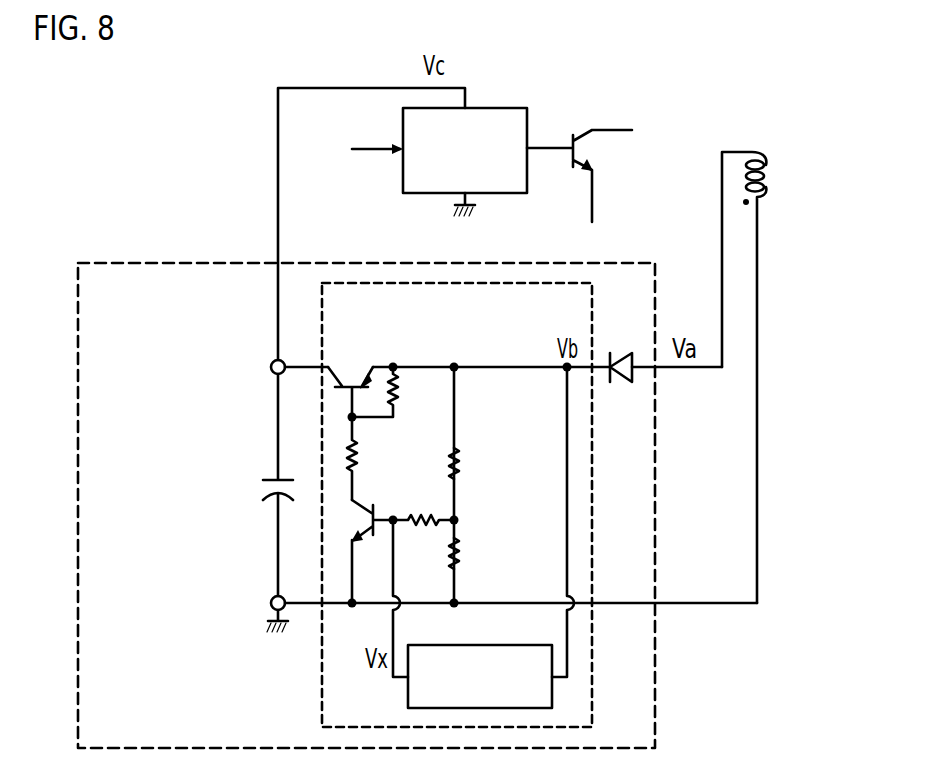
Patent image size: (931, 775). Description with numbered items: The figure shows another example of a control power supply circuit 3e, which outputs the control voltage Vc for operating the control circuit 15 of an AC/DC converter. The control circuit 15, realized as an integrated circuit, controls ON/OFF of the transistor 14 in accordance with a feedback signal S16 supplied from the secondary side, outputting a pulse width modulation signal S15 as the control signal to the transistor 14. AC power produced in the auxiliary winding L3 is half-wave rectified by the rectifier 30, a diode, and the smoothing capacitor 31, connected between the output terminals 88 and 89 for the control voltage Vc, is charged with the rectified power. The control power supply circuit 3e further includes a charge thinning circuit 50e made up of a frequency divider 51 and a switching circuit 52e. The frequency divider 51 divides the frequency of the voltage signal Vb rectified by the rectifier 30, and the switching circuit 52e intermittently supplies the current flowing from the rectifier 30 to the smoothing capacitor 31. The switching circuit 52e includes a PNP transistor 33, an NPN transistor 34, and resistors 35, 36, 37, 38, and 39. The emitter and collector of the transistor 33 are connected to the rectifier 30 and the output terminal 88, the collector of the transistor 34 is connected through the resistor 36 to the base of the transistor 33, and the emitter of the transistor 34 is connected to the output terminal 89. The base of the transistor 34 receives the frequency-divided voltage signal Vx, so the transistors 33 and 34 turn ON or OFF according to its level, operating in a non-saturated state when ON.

The control power supply circuit 3e is at (78, 420).
The charge thinning circuit 50e is at (322, 688).
The switching circuit 52e is at (428, 457).
The control circuit 15 is at (496, 107).
The transistor 14 is at (577, 162).
The pulse width modulation signal S15 is at (545, 146).
The feedback signal S16 is at (374, 144).
The auxiliary winding L3 is at (767, 172).
The rectifier 30 is at (623, 355).
The smoothing capacitor 31 is at (282, 479).
The PNP transistor 33 is at (344, 379).
The NPN transistor 34 is at (363, 506).
The resistor 35 is at (399, 392).
The resistor 36 is at (357, 469).
The resistor 37 is at (461, 463).
The resistor 38 is at (460, 558).
The resistor 39 is at (420, 514).
The frequency divider 51 is at (435, 645).
The output terminal 88 is at (272, 381).
The output terminal 89 is at (272, 597).